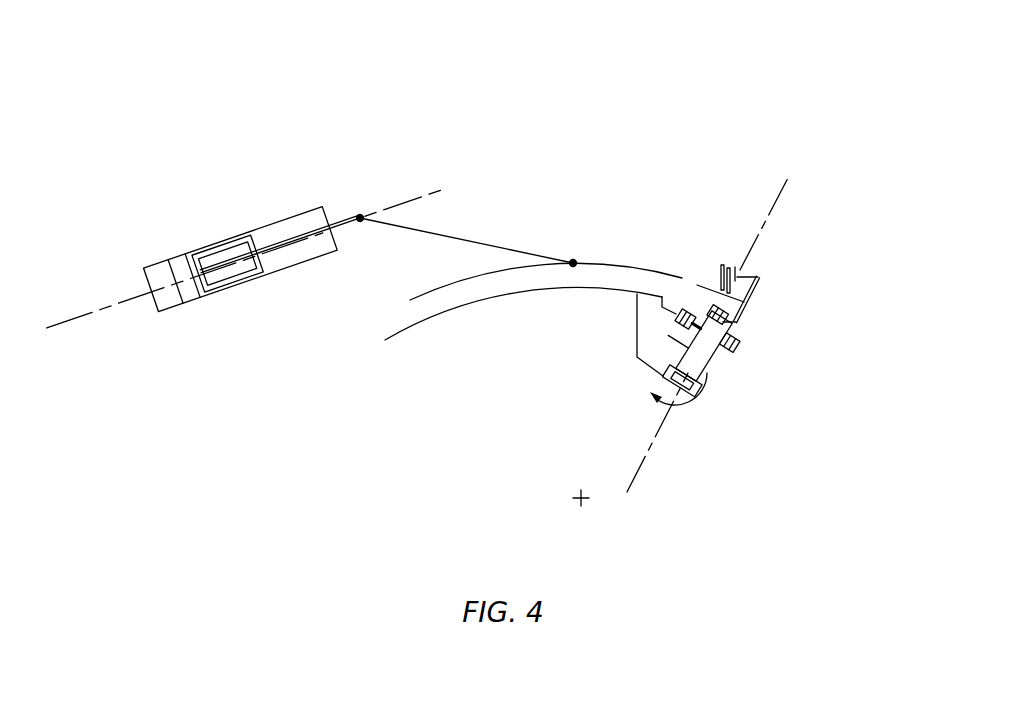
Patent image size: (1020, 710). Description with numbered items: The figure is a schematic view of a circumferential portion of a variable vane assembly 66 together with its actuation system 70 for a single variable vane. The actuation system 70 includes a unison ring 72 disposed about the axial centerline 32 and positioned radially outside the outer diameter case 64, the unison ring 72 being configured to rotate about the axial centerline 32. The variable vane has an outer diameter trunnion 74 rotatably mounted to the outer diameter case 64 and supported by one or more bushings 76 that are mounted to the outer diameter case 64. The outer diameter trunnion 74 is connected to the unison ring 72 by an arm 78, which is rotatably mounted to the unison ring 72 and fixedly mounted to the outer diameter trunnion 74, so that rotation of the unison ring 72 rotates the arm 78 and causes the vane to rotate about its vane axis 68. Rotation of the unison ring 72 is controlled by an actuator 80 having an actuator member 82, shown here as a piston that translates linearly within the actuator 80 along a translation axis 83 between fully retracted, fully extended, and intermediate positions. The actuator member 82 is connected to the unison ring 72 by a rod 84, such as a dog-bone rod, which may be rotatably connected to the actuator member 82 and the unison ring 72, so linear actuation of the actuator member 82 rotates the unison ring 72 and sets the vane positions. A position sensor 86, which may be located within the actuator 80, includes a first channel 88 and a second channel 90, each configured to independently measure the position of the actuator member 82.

The axial centerline 32 is at (587, 500).
The outer diameter case 64 is at (500, 297).
The variable vane assembly 66 is at (725, 312).
The vane axis 68 is at (787, 186).
The actuation system 70 is at (564, 233).
The unison ring 72 is at (620, 264).
The outer diameter trunnion 74 is at (717, 352).
The bushing 76 is at (735, 335).
The arm 78 is at (746, 304).
The actuator 80 is at (254, 253).
The actuator member 82 is at (338, 207).
The translation axis 83 is at (440, 188).
The rod 84 is at (497, 247).
The position sensor 86 is at (178, 266).
The first channel 88 is at (223, 252).
The second channel 90 is at (236, 272).